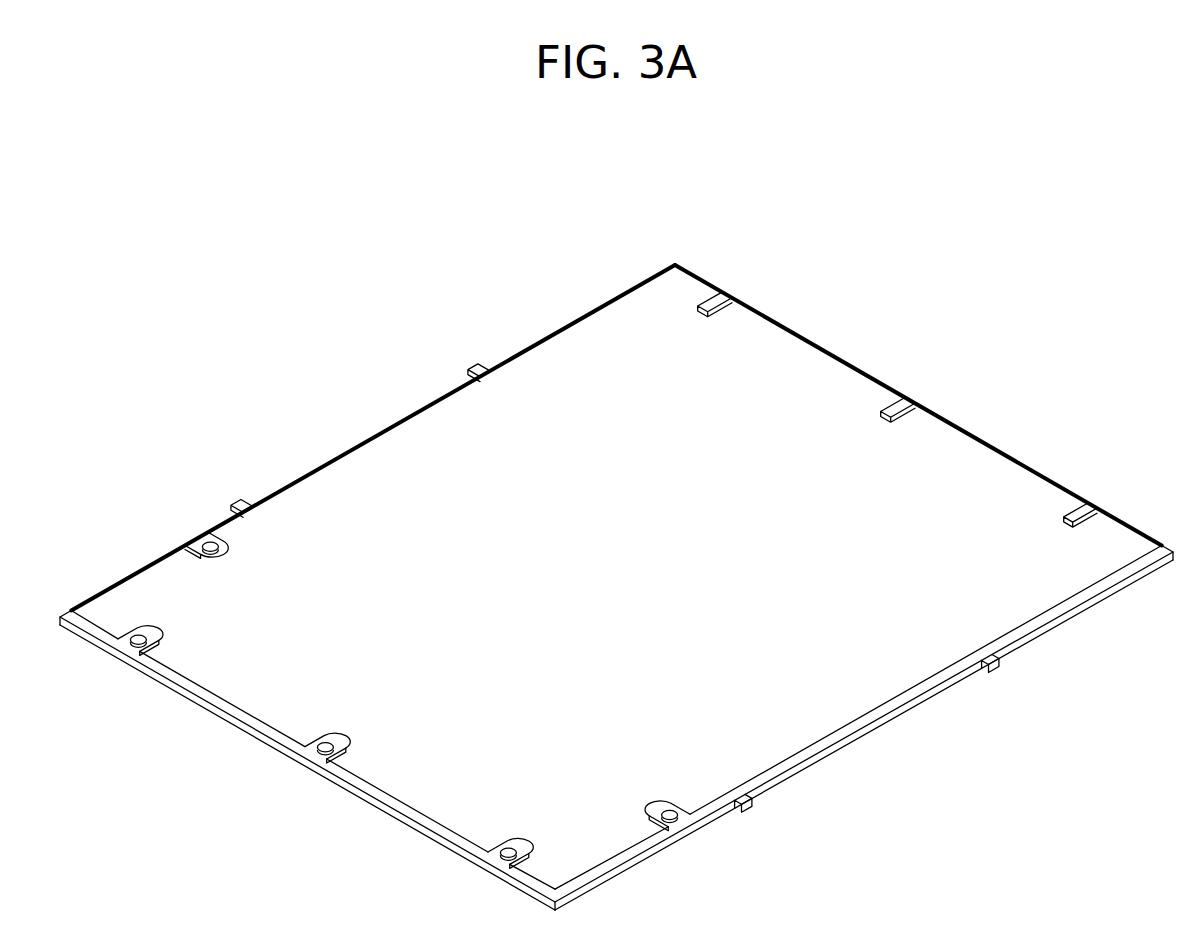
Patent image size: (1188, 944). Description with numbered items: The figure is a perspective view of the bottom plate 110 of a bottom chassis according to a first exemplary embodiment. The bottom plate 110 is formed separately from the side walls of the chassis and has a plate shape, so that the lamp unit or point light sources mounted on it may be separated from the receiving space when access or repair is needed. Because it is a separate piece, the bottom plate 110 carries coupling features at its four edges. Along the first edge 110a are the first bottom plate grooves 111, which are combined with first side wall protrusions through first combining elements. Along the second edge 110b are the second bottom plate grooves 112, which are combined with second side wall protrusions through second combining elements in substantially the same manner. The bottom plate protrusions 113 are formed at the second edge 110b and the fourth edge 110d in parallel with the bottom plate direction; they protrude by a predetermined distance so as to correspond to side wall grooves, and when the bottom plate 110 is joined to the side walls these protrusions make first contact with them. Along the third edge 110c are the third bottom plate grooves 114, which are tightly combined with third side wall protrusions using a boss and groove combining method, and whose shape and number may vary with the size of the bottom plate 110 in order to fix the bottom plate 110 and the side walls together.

The bottom plate 110 is at (609, 202).
The first edge 110a is at (237, 720).
The second edge 110b is at (903, 712).
The third edge 110c is at (1028, 467).
The fourth edge 110d is at (365, 441).
The first bottom plate grooves 111 is at (322, 758).
The second bottom plate grooves 112 is at (672, 826).
The bottom plate protrusions 113 is at (758, 798).
The third bottom plate grooves 114 is at (913, 401).